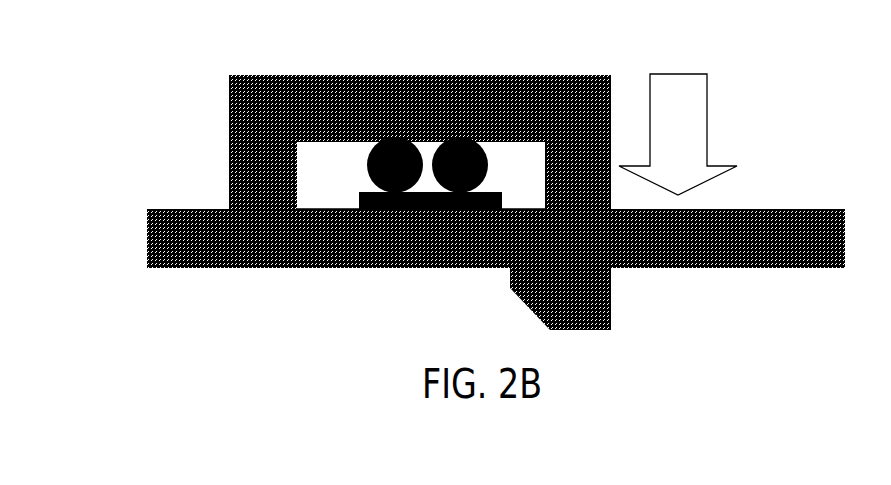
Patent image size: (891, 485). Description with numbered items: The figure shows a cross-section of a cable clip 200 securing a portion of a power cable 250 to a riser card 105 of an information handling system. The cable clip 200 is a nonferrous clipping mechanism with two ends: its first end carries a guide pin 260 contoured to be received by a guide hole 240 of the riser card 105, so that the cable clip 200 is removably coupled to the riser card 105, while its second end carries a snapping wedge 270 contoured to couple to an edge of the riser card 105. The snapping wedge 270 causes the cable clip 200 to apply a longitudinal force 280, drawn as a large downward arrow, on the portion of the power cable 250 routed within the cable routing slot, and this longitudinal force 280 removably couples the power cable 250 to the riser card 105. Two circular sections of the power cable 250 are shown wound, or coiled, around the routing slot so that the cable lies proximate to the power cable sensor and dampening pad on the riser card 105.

The cable clip 200 is at (488, 179).
The riser card 105 is at (822, 201).
The guide hole 240 is at (494, 255).
The guide pin 260 is at (423, 202).
The snapping wedge 270 is at (619, 304).
The power cable 250 is at (454, 134).
The longitudinal force 280 is at (678, 134).